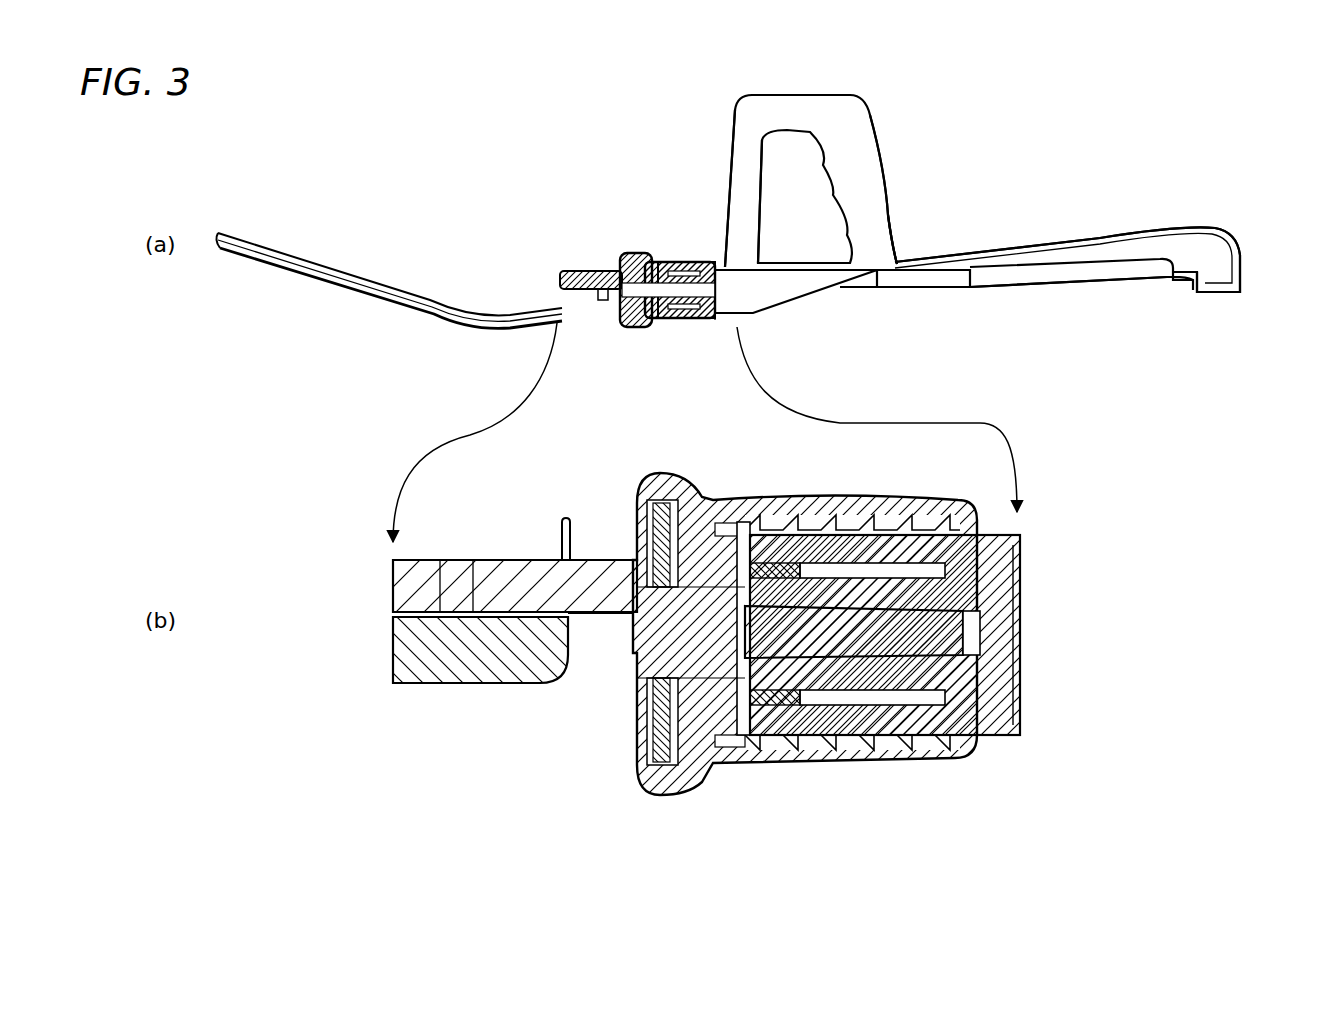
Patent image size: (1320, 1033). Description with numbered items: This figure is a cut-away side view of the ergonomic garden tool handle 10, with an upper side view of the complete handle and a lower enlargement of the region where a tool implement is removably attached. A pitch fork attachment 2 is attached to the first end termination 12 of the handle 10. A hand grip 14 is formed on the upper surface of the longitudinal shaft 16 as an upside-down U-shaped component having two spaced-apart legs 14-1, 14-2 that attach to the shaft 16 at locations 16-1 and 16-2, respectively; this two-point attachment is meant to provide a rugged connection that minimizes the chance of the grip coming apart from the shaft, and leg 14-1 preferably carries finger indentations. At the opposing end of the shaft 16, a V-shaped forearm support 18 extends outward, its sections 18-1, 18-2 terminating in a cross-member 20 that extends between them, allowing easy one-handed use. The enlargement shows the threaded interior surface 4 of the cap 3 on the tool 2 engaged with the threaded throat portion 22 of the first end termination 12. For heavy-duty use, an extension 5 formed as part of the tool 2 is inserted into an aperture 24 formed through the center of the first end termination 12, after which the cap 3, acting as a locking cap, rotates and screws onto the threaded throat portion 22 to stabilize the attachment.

The tool handle 10 is at (372, 146).
The pitch fork attachment 2 is at (282, 254).
The cap 3 is at (634, 260).
The threaded interior surface 4 is at (668, 262).
The extension 5 is at (781, 635).
The first end termination 12 is at (710, 320).
The hand grip 14 is at (812, 92).
The leg 14-1 is at (882, 178).
The leg 14-2 is at (740, 162).
The longitudinal shaft 16 is at (818, 290).
The attachment location 16-1 is at (897, 264).
The attachment location 16-2 is at (740, 264).
The forearm support 18 is at (1098, 306).
The section of forearm support 18-1 is at (1140, 238).
The section of forearm support 18-2 is at (1150, 278).
The cross-member 20 is at (1215, 248).
The threaded throat portion 22 is at (655, 325).
The aperture 24 is at (1008, 634).